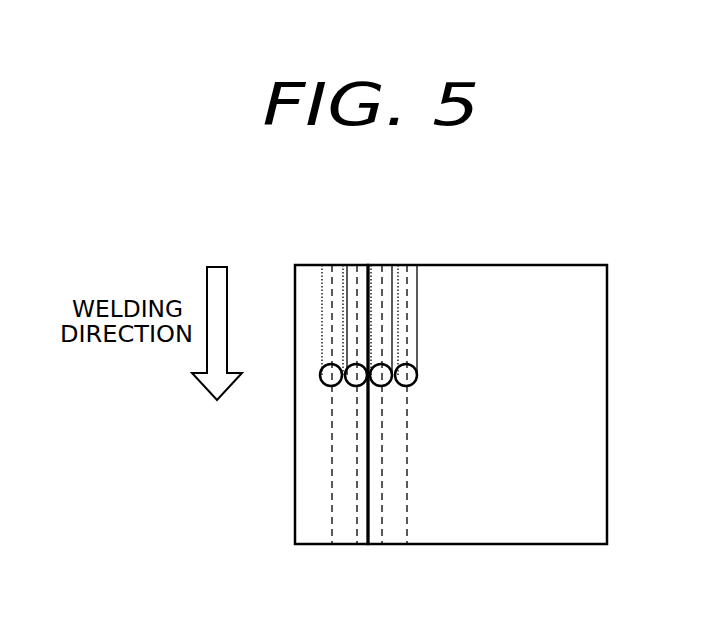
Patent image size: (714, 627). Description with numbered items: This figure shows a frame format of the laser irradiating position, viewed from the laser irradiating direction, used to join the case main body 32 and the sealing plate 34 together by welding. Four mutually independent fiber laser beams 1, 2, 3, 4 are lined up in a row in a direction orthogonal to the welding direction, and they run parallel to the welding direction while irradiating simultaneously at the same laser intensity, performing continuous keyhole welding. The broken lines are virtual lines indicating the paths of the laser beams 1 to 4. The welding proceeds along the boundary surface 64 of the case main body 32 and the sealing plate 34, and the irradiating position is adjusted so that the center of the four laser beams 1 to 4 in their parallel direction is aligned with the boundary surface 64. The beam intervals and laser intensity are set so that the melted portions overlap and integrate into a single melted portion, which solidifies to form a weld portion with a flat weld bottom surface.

The laser beam 1 is at (325, 384).
The laser beam 2 is at (350, 384).
The laser beam 3 is at (375, 384).
The laser beam 4 is at (398, 384).
The case main body 32 is at (313, 533).
The sealing plate 34 is at (538, 535).
The boundary surface 64 is at (373, 535).